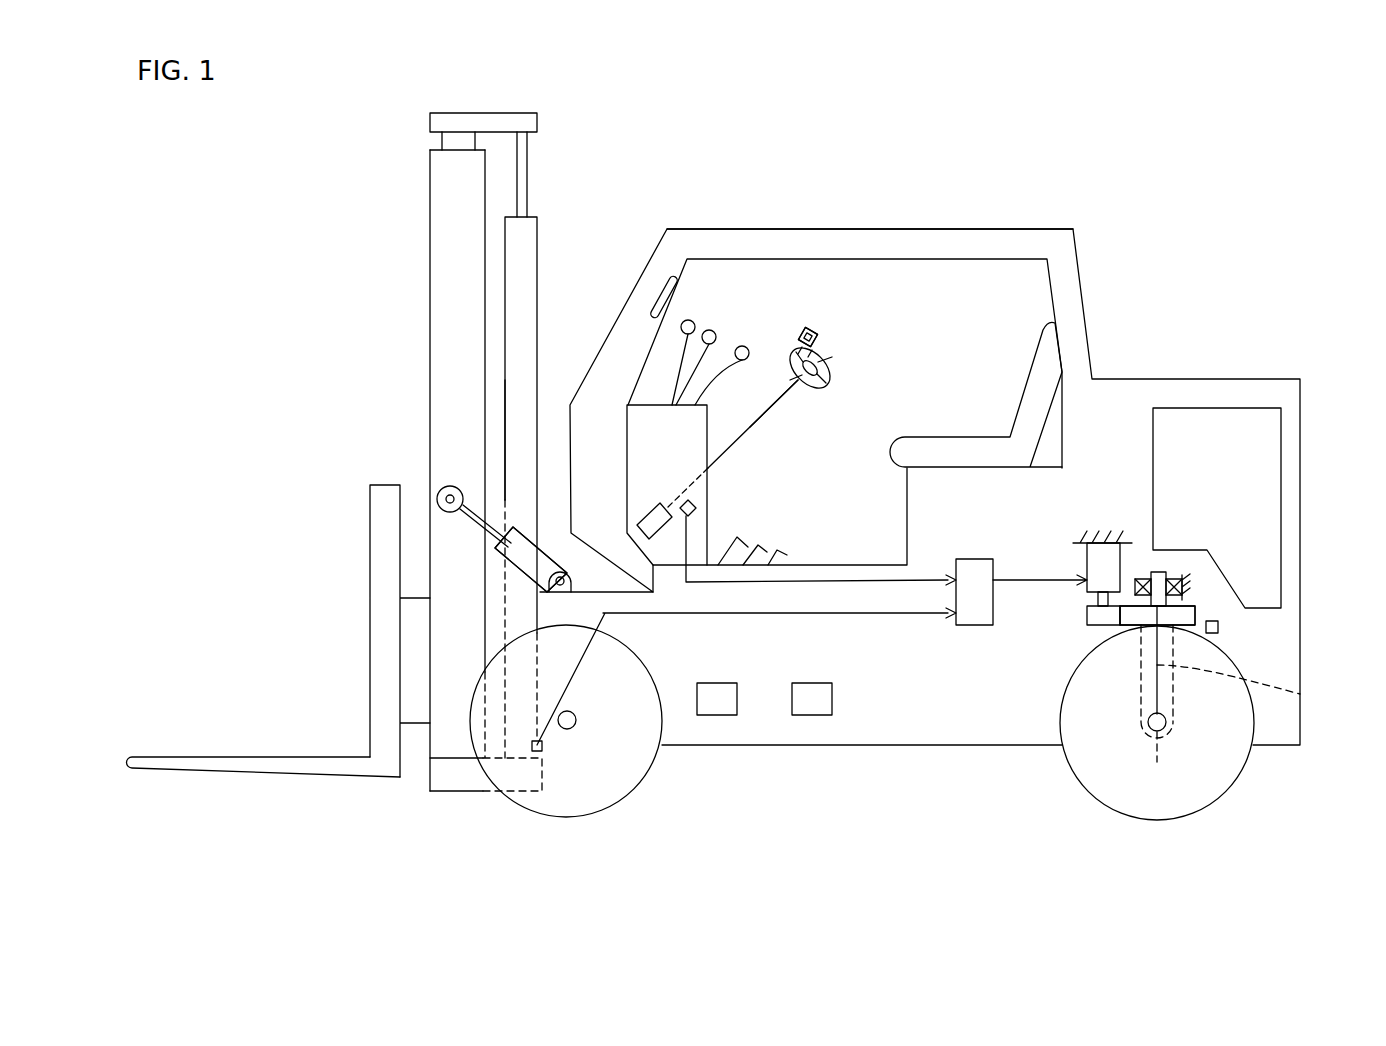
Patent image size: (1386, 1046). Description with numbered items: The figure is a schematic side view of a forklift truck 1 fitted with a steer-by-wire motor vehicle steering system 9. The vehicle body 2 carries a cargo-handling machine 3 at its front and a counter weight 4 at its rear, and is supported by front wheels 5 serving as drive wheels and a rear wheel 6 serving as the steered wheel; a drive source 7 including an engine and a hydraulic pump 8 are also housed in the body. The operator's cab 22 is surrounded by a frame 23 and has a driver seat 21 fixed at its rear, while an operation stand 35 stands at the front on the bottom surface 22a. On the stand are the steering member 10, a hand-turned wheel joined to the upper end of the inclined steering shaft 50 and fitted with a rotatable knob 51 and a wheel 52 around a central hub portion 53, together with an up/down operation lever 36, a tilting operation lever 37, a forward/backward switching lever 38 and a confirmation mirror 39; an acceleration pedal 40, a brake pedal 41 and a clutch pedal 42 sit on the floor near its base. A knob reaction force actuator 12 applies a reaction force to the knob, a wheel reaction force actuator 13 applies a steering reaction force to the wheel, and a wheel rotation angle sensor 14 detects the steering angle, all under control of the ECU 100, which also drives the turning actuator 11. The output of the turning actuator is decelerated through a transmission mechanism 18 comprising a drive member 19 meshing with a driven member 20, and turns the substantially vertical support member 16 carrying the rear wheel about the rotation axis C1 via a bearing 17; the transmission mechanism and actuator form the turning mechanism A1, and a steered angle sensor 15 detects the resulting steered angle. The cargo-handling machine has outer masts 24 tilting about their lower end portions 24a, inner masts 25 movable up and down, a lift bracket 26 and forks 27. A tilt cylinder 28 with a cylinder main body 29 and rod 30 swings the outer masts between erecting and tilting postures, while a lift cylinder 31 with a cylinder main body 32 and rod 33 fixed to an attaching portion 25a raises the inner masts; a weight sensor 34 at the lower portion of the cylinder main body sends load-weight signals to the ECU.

The forklift truck 1 is at (1109, 274).
The vehicle body 2 is at (985, 748).
The cargo-handling machine 3 is at (420, 317).
The counter weight 4 is at (1268, 455).
The front wheels 5 is at (607, 790).
The rear wheel 6 is at (1198, 792).
The drive source 7 is at (815, 716).
The hydraulic pump 8 is at (720, 716).
The motor vehicle steering system 9 is at (831, 343).
The steering member 10 is at (830, 392).
The turning actuator 11 is at (1098, 560).
The knob reaction force actuator 12 is at (799, 338).
The wheel reaction force actuator 13 is at (650, 512).
The wheel rotation angle sensor 14 is at (686, 500).
The steered angle sensor 15 is at (1218, 630).
The support member 16 is at (1138, 697).
The bearing 17 is at (1172, 572).
The transmission mechanism 18 is at (1087, 628).
The drive member 19 is at (1090, 618).
The driven member 20 is at (1195, 615).
The driver seat 21 is at (962, 440).
The operator's cab 22 is at (925, 282).
The bottom surface 22a is at (857, 565).
The frame 23 is at (800, 243).
The outer masts 24 is at (440, 372).
The lower end portions 24a is at (452, 780).
The inner masts 25 is at (440, 142).
The attaching portion 25a is at (497, 115).
The lift bracket 26 is at (415, 672).
The forks 27 is at (215, 762).
The tilt cylinder 28 is at (553, 542).
The cylinder main body 29 is at (510, 577).
The rod 30 is at (475, 533).
The lift cylinder 31 is at (495, 442).
The cylinder main body 32 is at (510, 243).
The rod 33 is at (515, 195).
The weight sensor 34 is at (545, 746).
The operation stand 35 is at (650, 405).
The up/down operation lever 36 is at (690, 320).
The tilting operation lever 37 is at (715, 332).
The forward/backward switching lever 38 is at (742, 360).
The confirmation mirror 39 is at (658, 300).
The acceleration pedal 40 is at (728, 540).
The brake pedal 41 is at (757, 540).
The clutch pedal 42 is at (782, 545).
The steering shaft 50 is at (785, 397).
The knob 51 is at (812, 328).
The wheel 52 is at (827, 360).
The steering wheel hub 53 is at (829, 380).
The ECU 100 is at (975, 568).
The turning mechanism A1 is at (1128, 564).
The rotation axis C1 is at (1300, 694).